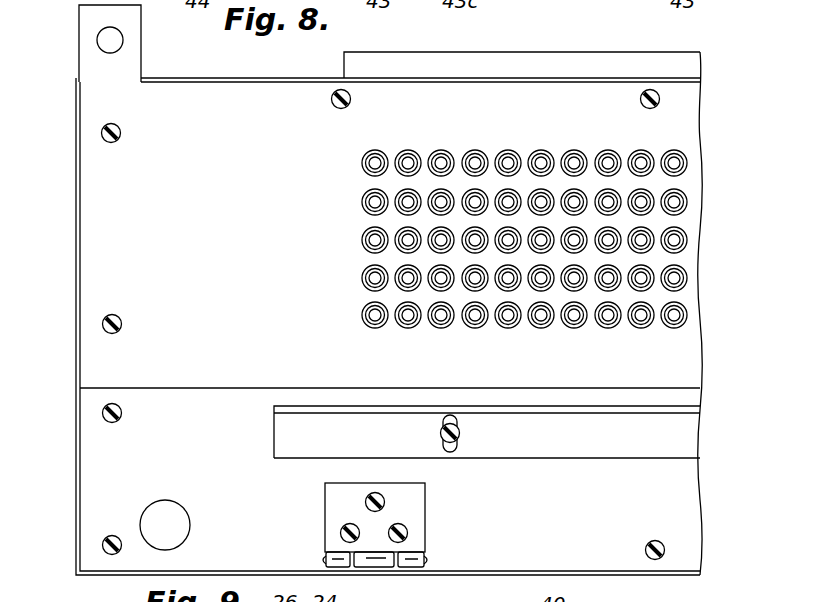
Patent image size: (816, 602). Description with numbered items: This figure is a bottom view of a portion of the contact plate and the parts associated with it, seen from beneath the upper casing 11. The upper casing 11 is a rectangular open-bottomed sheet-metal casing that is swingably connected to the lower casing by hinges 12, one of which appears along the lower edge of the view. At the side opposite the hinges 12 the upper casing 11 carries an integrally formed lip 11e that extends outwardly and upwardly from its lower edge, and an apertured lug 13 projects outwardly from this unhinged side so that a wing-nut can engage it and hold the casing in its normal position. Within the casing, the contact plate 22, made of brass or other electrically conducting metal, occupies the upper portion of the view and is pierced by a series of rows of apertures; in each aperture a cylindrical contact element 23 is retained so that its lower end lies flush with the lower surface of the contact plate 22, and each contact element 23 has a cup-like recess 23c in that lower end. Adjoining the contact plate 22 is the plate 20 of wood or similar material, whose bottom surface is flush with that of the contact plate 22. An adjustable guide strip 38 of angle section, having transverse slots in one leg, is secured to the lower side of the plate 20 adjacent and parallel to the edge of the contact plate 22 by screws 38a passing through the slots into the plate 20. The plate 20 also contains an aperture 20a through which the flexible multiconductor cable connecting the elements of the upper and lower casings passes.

The upper casing 11 is at (78, 360).
The lip 11e is at (586, 66).
The lugs 13 is at (92, 23).
The contact plate 22 is at (107, 247).
The contact element 23 is at (378, 160).
The cup-like recess 23c is at (541, 160).
The plate 20 is at (100, 475).
The aperture 20a is at (170, 516).
The adjustable guide strip 38 is at (320, 443).
The screws 38a is at (440, 443).
The hinges 12 is at (372, 559).